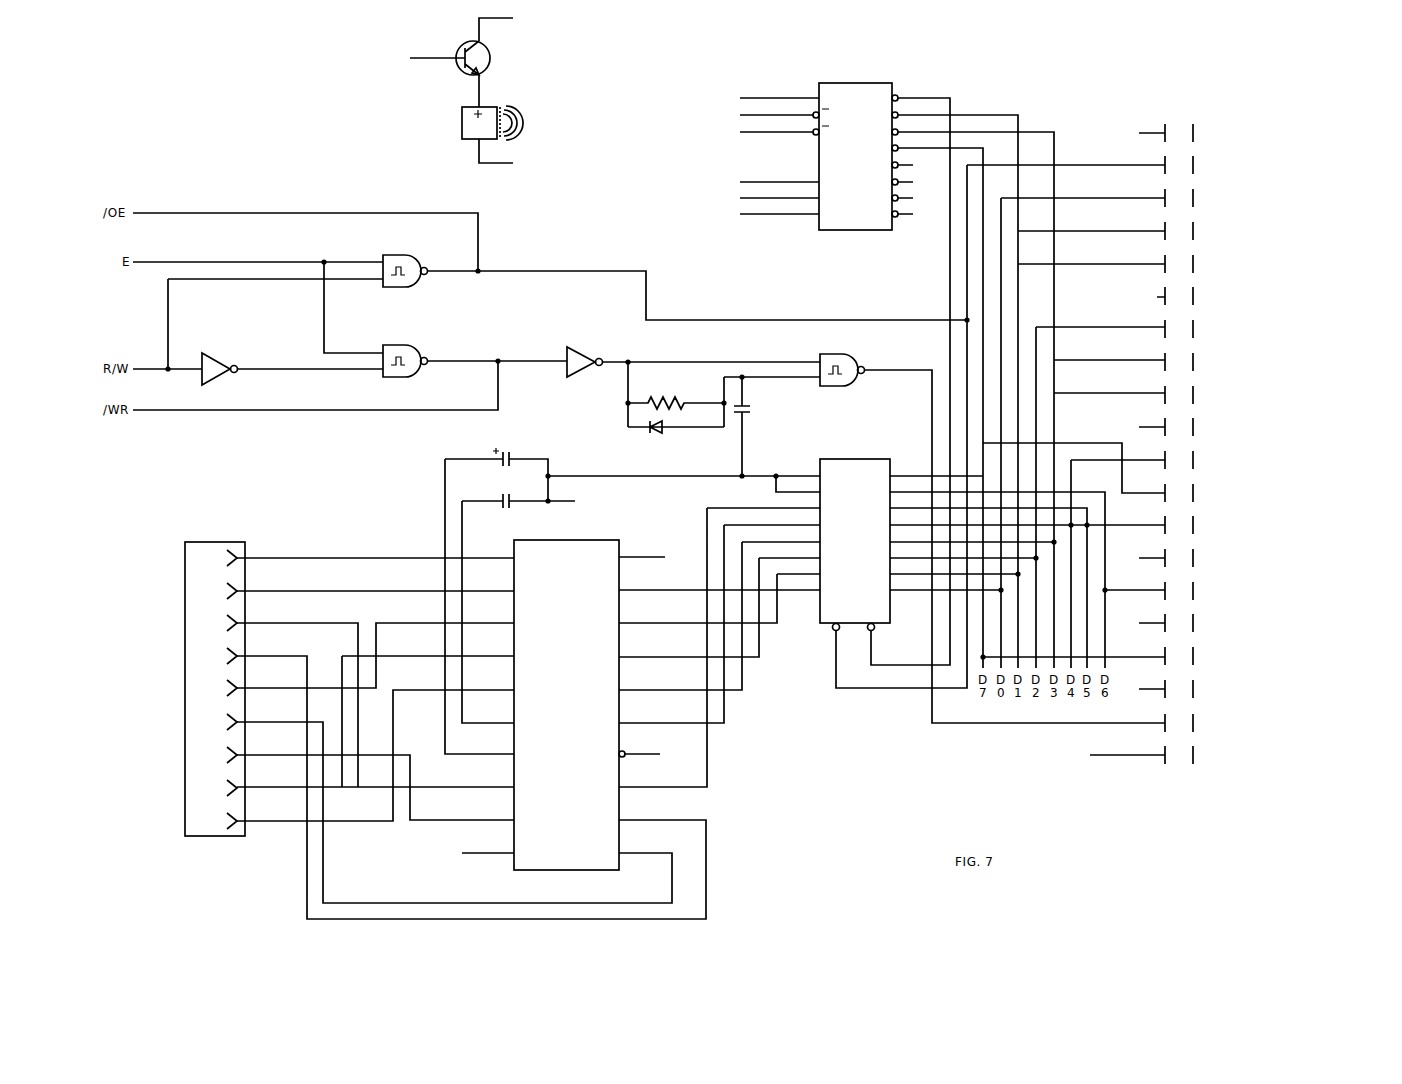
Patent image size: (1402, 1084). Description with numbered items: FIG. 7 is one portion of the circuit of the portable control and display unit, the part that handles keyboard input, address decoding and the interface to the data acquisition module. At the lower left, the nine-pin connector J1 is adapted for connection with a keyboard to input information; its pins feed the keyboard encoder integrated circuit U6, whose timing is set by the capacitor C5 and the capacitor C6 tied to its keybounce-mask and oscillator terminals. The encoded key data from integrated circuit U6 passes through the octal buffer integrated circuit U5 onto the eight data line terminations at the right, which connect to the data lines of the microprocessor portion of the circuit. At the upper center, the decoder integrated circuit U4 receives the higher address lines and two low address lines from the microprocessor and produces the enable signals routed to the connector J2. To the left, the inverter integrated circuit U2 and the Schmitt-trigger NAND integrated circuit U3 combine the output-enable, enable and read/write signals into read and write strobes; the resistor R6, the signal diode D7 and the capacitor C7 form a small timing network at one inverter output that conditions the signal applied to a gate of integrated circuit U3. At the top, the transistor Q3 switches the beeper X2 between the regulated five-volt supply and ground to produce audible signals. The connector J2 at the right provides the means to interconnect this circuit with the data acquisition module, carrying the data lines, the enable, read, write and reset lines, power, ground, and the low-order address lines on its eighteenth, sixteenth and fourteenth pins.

The transistor Q3 is at (464, 59).
The beeper X2 is at (505, 129).
The integrated circuit U2 is at (498, 352).
The integrated circuit U3 is at (765, 476).
The integrated circuit U4 is at (812, 143).
The integrated circuit U5 is at (858, 539).
The integrated circuit U6 is at (559, 705).
The resistor R6 is at (676, 391).
The signal diode D7 is at (676, 429).
The capacitor C5 is at (496, 467).
The capacitor C6 is at (534, 500).
The capacitor C7 is at (758, 426).
The connector J1 is at (159, 692).
The connector J2 is at (1207, 444).